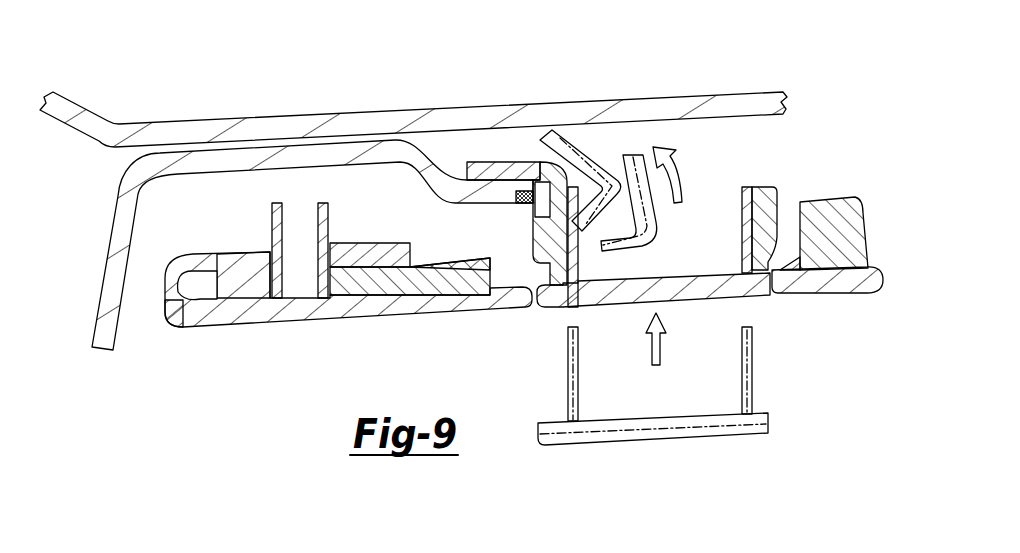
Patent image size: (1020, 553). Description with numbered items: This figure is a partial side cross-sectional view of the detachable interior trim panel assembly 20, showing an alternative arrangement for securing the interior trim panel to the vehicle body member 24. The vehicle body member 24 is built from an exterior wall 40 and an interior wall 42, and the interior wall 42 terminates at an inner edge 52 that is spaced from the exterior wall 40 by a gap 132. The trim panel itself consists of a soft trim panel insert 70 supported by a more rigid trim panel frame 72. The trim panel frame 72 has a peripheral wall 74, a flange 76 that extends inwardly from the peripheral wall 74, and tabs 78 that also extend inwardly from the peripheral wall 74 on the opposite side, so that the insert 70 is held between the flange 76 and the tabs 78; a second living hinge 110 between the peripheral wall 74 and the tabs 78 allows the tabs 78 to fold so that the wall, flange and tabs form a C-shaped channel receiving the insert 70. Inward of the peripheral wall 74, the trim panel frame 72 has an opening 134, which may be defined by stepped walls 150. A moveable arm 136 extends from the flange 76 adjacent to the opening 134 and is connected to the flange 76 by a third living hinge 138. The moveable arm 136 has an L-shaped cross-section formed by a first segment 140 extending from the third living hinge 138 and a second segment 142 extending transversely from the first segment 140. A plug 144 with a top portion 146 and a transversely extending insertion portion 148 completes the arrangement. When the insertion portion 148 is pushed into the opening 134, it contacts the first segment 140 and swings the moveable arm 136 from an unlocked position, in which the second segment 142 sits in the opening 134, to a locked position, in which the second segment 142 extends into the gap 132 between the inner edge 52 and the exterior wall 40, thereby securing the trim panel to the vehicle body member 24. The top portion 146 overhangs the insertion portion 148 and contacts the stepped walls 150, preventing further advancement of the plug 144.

The detachable interior trim panel assembly 20 is at (80, 72).
The vehicle body member 24 is at (122, 98).
The exterior wall 40 is at (350, 127).
The interior wall 42 is at (117, 213).
The inner edge 52 is at (523, 194).
The trim panel insert 70 is at (373, 282).
The trim panel frame 72 is at (263, 345).
The peripheral wall 74 is at (173, 297).
The flange 76 is at (360, 312).
The tabs 78 is at (240, 260).
The second living hinge 110 is at (172, 276).
The gap 132 is at (476, 158).
The openings 134 is at (730, 251).
The moveable arm 136 is at (605, 143).
The third living hinge 138 is at (566, 262).
The first segment 140 is at (500, 308).
The second segment 142 is at (521, 170).
The plug 144 is at (680, 465).
The top portion 146 is at (695, 300).
The insertion portion 148 is at (740, 186).
The stepped walls 150 is at (490, 262).